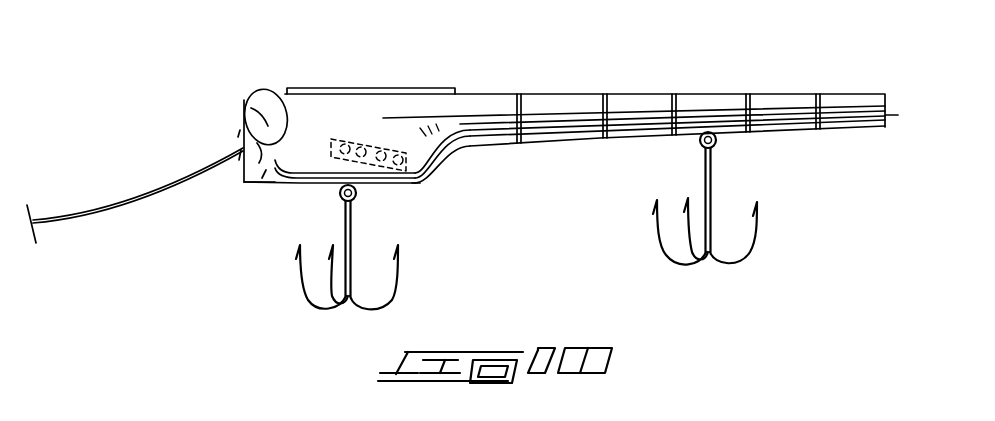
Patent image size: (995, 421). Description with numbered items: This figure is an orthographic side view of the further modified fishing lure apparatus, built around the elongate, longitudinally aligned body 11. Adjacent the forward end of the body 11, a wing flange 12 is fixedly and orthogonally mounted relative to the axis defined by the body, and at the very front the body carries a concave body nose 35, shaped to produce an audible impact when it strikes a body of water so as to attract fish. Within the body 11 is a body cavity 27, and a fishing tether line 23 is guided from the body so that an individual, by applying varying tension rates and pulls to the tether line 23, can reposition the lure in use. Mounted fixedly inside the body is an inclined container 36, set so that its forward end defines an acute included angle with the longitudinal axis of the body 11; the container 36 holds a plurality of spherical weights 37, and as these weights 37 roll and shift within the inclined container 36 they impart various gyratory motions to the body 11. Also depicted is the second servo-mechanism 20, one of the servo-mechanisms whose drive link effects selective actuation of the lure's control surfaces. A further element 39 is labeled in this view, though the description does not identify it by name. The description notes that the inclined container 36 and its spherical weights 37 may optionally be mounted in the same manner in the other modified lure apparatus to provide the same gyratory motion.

The elongate body 11 is at (655, 105).
The wing flange 12 is at (420, 88).
The second servo-mechanism 20 is at (352, 242).
The fishing tether line 23 is at (132, 203).
The body cavity 27 is at (448, 150).
The concave body nose 35 is at (245, 167).
The inclined container 36 is at (347, 140).
The spherical weights 37 is at (425, 185).
The line channel 39 is at (563, 117).